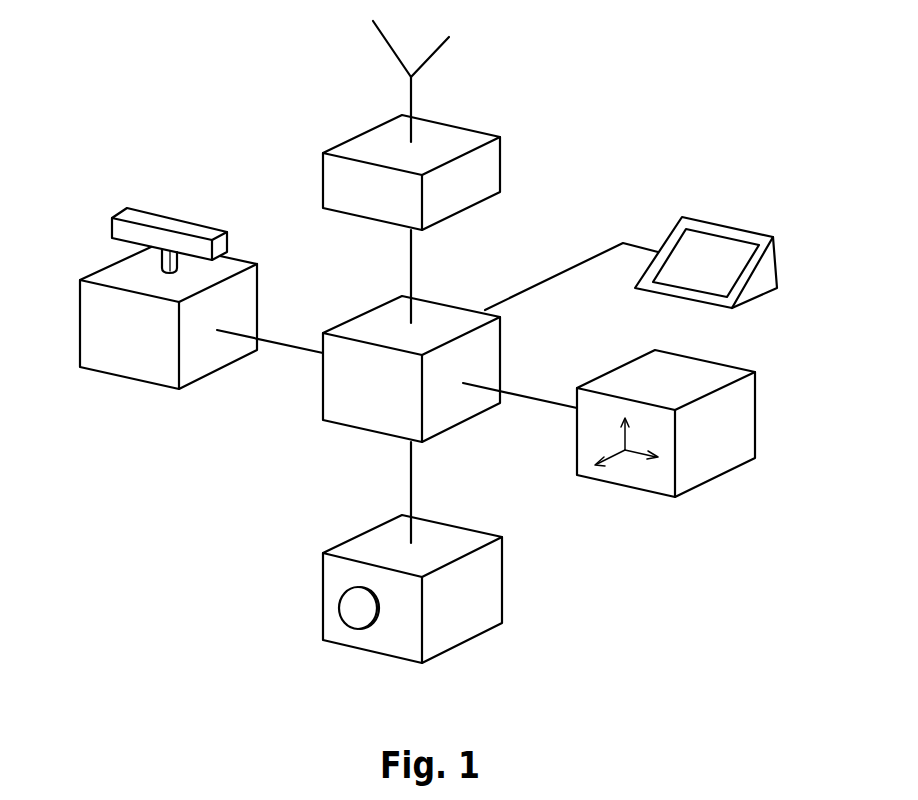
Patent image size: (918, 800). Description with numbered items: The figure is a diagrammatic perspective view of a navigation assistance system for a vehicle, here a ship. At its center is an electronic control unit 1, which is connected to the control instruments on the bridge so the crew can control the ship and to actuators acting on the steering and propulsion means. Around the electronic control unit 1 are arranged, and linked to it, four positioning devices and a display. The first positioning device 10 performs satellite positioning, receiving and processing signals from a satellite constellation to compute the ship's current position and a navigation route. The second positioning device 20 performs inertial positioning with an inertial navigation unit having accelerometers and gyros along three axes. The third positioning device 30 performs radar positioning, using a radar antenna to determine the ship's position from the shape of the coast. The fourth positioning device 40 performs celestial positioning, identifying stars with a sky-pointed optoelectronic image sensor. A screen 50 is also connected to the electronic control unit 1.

The electronic control unit 1 is at (350, 418).
The first positioning device 10 is at (490, 173).
The second positioning device 20 is at (718, 456).
The third positioning device 30 is at (137, 367).
The fourth positioning device 40 is at (463, 627).
The screen 50 is at (723, 232).